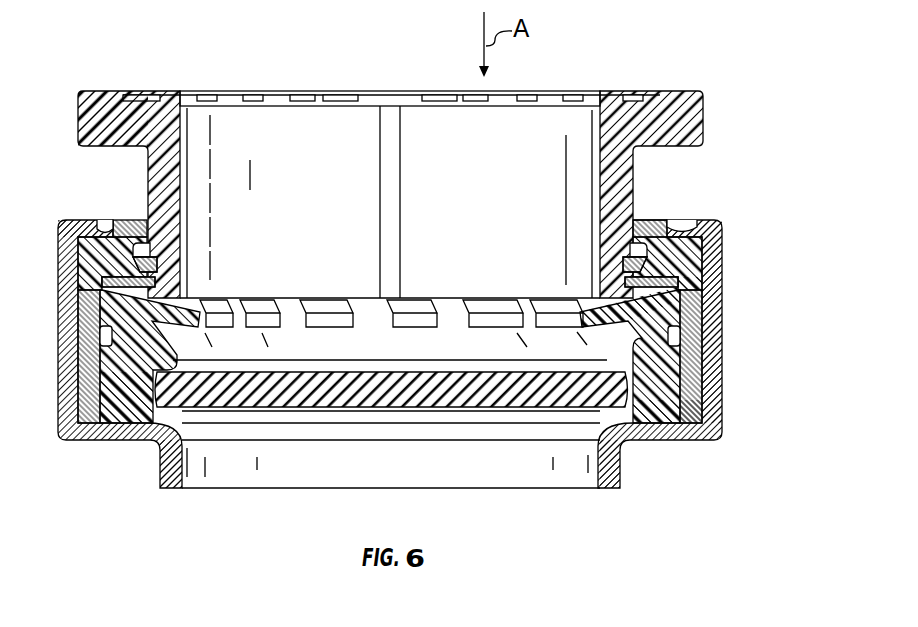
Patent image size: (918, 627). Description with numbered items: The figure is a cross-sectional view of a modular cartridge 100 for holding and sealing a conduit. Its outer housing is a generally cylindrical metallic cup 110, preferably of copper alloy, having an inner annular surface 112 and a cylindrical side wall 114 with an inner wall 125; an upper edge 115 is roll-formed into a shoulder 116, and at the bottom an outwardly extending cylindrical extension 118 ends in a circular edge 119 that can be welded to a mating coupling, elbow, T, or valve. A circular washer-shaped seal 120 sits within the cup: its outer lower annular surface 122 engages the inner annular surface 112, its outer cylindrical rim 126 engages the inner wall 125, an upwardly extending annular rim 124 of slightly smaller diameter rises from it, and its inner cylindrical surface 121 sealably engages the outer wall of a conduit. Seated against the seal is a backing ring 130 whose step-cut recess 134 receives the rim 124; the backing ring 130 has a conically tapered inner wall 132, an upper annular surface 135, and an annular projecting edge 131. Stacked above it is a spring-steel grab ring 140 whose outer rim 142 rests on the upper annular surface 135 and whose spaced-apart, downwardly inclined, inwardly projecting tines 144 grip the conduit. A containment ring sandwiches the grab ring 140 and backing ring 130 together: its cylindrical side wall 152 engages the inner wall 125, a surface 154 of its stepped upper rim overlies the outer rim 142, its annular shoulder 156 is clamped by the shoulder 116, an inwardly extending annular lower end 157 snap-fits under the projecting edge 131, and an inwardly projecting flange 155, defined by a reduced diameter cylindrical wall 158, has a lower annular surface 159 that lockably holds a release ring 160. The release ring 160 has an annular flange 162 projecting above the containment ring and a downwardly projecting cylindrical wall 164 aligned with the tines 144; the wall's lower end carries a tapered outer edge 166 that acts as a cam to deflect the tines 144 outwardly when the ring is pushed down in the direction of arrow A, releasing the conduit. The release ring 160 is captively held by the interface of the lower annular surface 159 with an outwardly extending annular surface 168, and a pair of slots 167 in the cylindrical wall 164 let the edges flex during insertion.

The modular cartridge 100 is at (630, 55).
The cup 110 is at (718, 342).
The inner annular surface 112 is at (118, 418).
The cylindrical side wall 114 is at (722, 318).
The upper edge 115 is at (658, 220).
The shoulder 116 is at (84, 220).
The cylindrical extension 118 is at (618, 477).
The circular edge 119 is at (606, 503).
The seal 120 is at (358, 415).
The inner cylindrical surface 121 is at (420, 390).
The outer lower annular surface 122 is at (653, 420).
The annular rim 124 is at (663, 350).
The inner wall 125 is at (690, 410).
The outer cylindrical rim 126 is at (700, 385).
The backing ring 130 is at (176, 343).
The annular projecting edge 131 is at (128, 300).
The conically tapered inner wall 132 is at (497, 343).
The step-cut recess 134 is at (100, 382).
The upper annular surface 135 is at (625, 292).
The grab ring 140 is at (108, 338).
The outer rim 142 is at (110, 282).
The tines 144 is at (332, 330).
The cylindrical side wall 152 is at (723, 287).
The surface 154 is at (680, 287).
The inwardly projecting flange 155 is at (136, 220).
The annular shoulder 156 is at (104, 222).
The annular lower end 157 is at (155, 310).
The reduced diameter cylindrical wall 158 is at (162, 264).
The lower annular surface 159 is at (160, 249).
The release ring 160 is at (712, 106).
The annular flange 162 is at (98, 91).
The cylindrical wall 164 is at (600, 172).
The tapered outer edge 166 is at (606, 270).
The slots 167 is at (392, 200).
The outwardly extending annular surface 168 is at (606, 225).